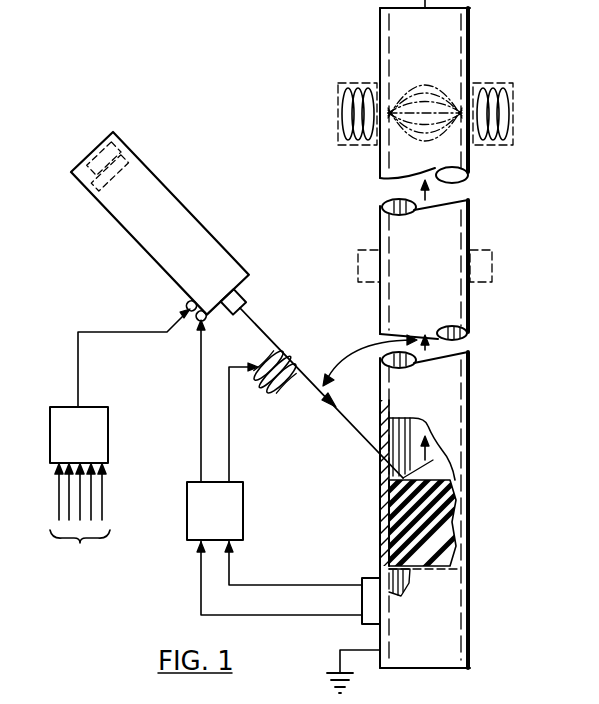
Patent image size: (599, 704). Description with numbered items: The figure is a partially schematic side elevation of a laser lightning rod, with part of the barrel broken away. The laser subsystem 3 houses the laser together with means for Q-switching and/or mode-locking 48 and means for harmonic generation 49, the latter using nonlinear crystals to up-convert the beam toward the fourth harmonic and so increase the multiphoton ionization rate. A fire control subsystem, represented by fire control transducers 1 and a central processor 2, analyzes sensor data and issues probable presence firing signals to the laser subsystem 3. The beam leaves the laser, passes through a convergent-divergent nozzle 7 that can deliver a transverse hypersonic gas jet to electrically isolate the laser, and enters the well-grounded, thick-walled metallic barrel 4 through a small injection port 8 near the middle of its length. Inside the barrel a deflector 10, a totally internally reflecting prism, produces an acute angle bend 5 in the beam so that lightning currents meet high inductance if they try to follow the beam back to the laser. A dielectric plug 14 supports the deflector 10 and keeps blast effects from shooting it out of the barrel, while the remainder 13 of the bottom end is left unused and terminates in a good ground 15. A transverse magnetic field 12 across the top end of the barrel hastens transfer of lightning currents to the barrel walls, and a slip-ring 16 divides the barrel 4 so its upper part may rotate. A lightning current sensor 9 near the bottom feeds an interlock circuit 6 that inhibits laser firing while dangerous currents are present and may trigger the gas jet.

The fire control transducers 1 is at (80, 517).
The central processor 2 is at (86, 446).
The laser subsystem 3 is at (166, 228).
The barrel 4 is at (470, 45).
The acute angle bend 5 is at (360, 353).
The interlock circuit 6 is at (222, 522).
The convergent-divergent nozzle 7 is at (264, 362).
The injection port 8 is at (384, 460).
The lightning current sensor 9 is at (372, 578).
The deflector 10 is at (448, 466).
The transverse magnetic field 12 is at (432, 100).
The remainder of the bottom end of the barrel 13 is at (437, 622).
The dielectric plug 14 is at (396, 518).
The ground 15 is at (340, 650).
The slip-ring 16 is at (492, 268).
The means for Q-switching and/or mode-locking 48 is at (118, 146).
The means for harmonic generation 49 is at (140, 172).